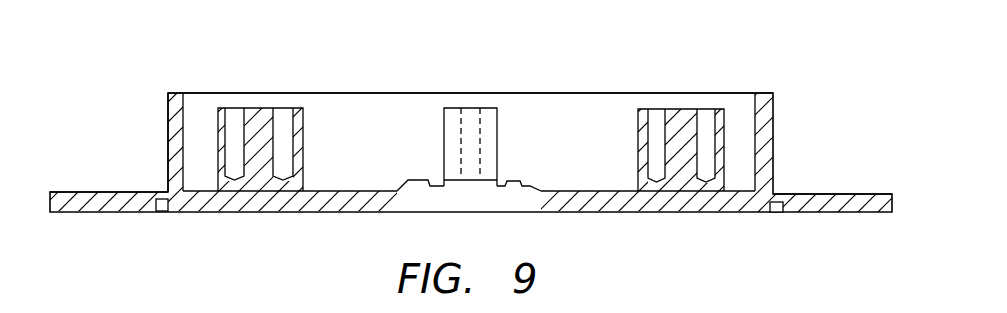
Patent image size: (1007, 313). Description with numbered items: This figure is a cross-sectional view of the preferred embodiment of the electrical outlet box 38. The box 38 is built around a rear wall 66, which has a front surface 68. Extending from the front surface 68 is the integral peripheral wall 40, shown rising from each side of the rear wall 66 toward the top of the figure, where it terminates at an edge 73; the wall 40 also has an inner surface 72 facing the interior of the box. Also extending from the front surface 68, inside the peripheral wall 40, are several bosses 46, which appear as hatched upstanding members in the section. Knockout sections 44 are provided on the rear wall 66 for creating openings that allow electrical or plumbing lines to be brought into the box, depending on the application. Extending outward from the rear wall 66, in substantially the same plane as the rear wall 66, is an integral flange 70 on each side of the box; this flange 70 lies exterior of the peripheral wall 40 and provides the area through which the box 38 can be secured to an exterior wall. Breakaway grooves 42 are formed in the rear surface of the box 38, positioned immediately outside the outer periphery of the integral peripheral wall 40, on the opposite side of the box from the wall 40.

The electrical outlet box 38 is at (809, 98).
The integral peripheral wall 40 is at (172, 108).
The breakaway grooves 42 is at (161, 211).
The knockout sections 44 is at (420, 179).
The bosses 46 is at (254, 108).
The rear wall 66 is at (569, 190).
The front surface 68 is at (332, 190).
The integral flange 70 is at (120, 196).
The inner surface 72 is at (186, 132).
The edge 73 is at (413, 92).